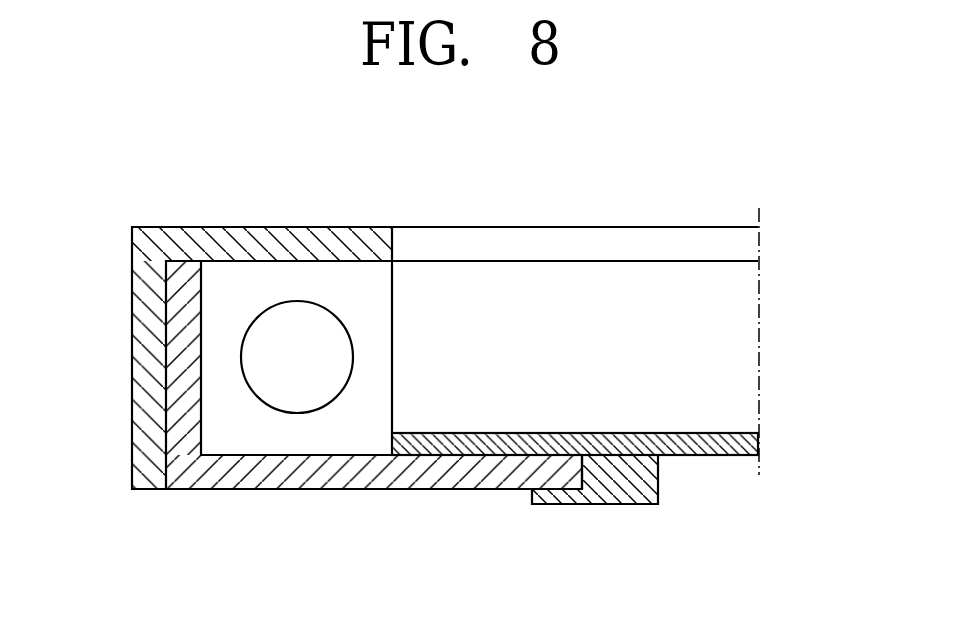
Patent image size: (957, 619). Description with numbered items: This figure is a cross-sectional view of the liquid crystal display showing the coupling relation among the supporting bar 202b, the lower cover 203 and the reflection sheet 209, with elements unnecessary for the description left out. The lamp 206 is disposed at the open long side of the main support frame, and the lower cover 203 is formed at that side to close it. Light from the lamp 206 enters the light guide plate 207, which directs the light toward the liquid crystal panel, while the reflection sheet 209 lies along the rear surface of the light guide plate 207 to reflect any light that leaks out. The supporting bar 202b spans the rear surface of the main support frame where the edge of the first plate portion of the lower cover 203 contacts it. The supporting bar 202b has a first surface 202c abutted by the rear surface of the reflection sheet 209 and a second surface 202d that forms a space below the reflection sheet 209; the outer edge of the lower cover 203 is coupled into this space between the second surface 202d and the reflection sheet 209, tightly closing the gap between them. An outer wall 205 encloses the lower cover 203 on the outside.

The lower cover 203 is at (178, 297).
The outer housing 205 is at (142, 403).
The lamp 206 is at (259, 357).
The light guide plate 207 is at (748, 354).
The reflection sheet 209 is at (752, 444).
The supporting bar 202b is at (617, 510).
The first surface 202c is at (637, 455).
The second surface 202d is at (550, 487).